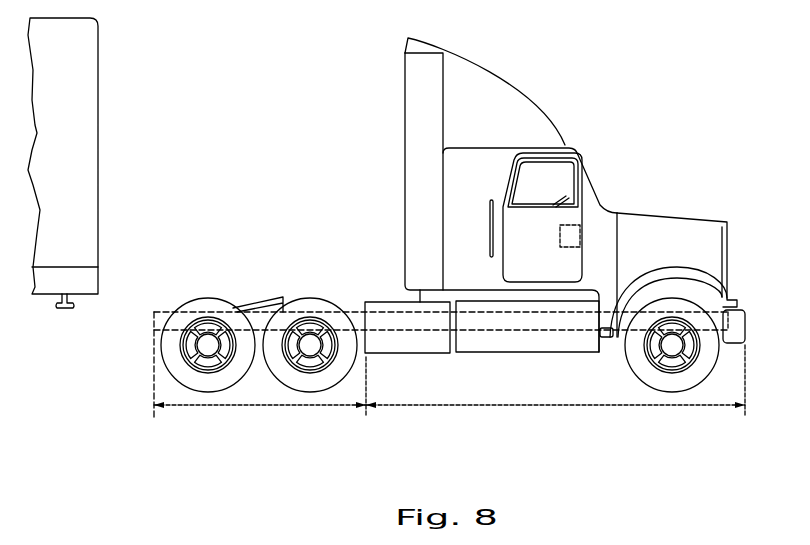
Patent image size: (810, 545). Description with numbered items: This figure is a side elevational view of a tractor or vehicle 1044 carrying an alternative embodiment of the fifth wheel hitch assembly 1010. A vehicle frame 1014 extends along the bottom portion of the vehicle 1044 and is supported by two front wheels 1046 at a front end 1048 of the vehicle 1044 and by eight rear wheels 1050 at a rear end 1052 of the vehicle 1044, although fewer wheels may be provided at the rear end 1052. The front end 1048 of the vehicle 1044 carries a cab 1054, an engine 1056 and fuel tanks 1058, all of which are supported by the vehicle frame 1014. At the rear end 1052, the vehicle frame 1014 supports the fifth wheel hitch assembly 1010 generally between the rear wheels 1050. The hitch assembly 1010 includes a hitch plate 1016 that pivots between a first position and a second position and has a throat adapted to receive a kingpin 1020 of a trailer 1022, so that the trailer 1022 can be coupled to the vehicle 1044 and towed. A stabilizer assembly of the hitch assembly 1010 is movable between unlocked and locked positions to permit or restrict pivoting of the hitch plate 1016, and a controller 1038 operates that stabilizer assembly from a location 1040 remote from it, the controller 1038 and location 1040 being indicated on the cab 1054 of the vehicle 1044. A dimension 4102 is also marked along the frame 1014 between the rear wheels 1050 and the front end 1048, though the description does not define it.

The trailer 1022 is at (85, 152).
The kingpin 1020 is at (67, 310).
The fifth wheel hitch assembly 1010 is at (233, 265).
The hitch plate 1016 is at (270, 298).
The rear wheels 1050 is at (240, 363).
The rear end 1052 is at (273, 358).
The cab 1054 is at (492, 165).
The vehicle 1044 is at (586, 99).
The controller 1038 is at (626, 183).
The location 1040 is at (573, 233).
The engine 1056 is at (648, 238).
The vehicle frame 1014 is at (395, 337).
The fuel tanks 1058 is at (533, 338).
The front wheels 1046 is at (642, 368).
The wheelbase dimension 4102 is at (501, 363).
The front end 1048 is at (548, 405).